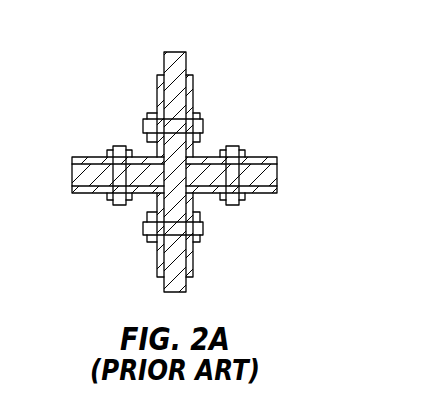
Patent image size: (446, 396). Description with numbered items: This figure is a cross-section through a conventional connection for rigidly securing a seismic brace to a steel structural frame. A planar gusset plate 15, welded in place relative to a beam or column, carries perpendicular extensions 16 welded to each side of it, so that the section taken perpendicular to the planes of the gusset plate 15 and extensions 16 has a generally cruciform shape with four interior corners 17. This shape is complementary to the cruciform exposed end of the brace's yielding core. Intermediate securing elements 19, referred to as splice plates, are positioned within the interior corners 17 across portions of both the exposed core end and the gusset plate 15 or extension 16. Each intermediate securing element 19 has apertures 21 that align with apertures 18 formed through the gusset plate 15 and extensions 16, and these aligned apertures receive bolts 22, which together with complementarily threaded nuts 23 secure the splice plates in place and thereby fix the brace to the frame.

The gusset plate 15 is at (186, 66).
The intermediate securing element 19 is at (160, 98).
The interior corner 17 is at (152, 197).
The aperture 18 is at (73, 178).
The aperture 21 is at (100, 193).
The bolt 22 is at (279, 178).
The extension 16 is at (93, 157).
The nut 23 is at (247, 150).